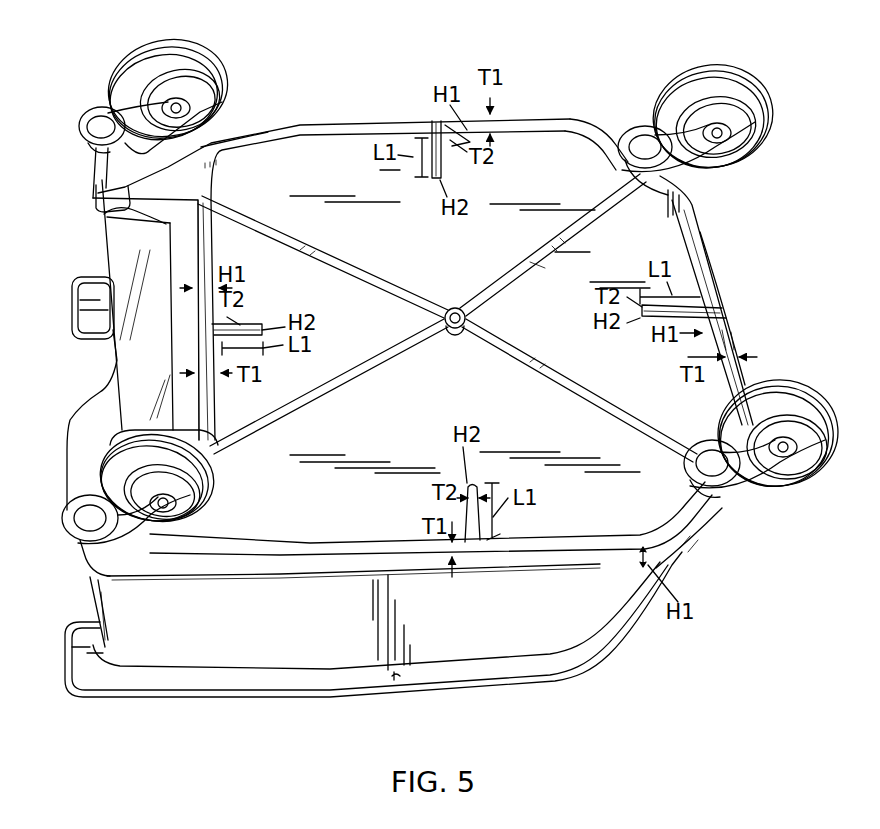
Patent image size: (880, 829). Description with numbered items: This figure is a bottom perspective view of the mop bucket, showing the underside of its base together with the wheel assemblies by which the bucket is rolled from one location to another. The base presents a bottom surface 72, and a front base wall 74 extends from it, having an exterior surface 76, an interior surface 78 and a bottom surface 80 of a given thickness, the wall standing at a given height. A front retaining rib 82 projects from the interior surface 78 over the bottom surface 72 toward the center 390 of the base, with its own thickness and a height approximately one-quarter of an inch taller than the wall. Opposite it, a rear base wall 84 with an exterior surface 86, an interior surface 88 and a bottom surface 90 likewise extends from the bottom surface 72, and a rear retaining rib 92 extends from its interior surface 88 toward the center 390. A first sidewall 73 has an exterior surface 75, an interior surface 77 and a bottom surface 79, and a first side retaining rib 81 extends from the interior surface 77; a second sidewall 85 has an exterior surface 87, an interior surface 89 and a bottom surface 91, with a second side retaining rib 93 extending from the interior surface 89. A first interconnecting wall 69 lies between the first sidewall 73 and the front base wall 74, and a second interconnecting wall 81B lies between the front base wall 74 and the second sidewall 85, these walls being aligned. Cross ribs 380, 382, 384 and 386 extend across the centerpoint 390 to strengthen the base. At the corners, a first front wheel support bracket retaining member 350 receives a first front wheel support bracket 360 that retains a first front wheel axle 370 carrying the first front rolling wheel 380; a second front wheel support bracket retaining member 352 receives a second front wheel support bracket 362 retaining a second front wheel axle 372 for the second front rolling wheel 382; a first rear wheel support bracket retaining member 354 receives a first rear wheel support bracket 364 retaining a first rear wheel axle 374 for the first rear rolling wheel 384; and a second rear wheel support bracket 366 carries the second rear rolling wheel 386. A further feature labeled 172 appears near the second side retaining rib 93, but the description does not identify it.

The first interconnecting wall 69 is at (687, 545).
The bottom surface 72 is at (519, 128).
The first sidewall 73 is at (533, 557).
The front base wall 74 is at (706, 243).
The exterior surface 75 is at (585, 566).
The exterior surface 76 is at (718, 267).
The interior surface 77 is at (567, 536).
The interior surface 78 is at (670, 212).
The bottom surface 79 is at (370, 548).
The bottom surface 80 is at (702, 230).
The first side retaining rib 81 is at (485, 543).
The second interconnecting wall 81B is at (600, 140).
The front retaining rib 82 is at (533, 270).
The rear base wall 84 is at (178, 242).
The second sidewall 85 is at (313, 122).
The exterior surface 86 is at (182, 297).
The exterior surface 87 is at (574, 121).
The interior surface 88 is at (205, 232).
The interior surface 89 is at (541, 134).
The bottom surface 90 is at (195, 270).
The bottom surface 91 is at (553, 125).
The rear retaining rib 92 is at (247, 322).
The second side retaining rib 93 is at (437, 177).
The tab rib 172 is at (447, 178).
The first front wheel support bracket retaining member 350 is at (101, 122).
The second front wheel support bracket retaining member 352 is at (643, 145).
The first rear wheel support bracket retaining member 354 is at (92, 527).
The first front wheel support bracket 360 is at (765, 470).
The second front wheel support bracket 362 is at (740, 130).
The first rear wheel support bracket 364 is at (130, 547).
The second rear wheel support bracket 366 is at (185, 107).
The first front wheel axle 370 is at (180, 110).
The second front wheel axle 372 is at (737, 125).
The first rear wheel axle 374 is at (165, 512).
The first front rolling wheel 380 is at (165, 58).
The second front rolling wheel 382 is at (707, 80).
The first rear rolling wheel 384 is at (560, 378).
The second rear rolling wheel 386 is at (358, 375).
The center 390 is at (450, 326).